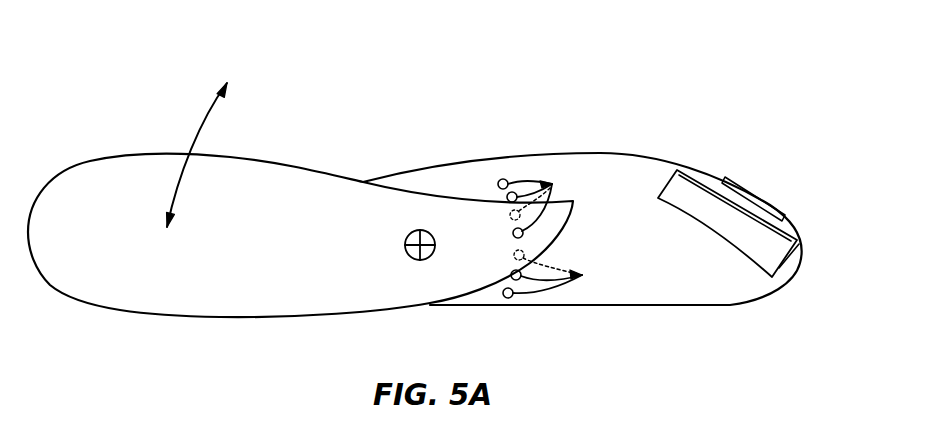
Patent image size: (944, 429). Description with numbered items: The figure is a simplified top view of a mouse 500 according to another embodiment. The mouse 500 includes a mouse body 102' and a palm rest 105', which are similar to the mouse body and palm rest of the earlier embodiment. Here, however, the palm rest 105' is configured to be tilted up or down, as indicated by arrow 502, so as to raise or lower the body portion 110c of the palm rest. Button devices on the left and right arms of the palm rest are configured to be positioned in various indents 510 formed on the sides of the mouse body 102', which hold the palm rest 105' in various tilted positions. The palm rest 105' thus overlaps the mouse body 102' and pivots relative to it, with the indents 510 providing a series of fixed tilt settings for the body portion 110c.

The mouse 500 is at (770, 73).
The mouse body 102' is at (582, 195).
The palm rest 105' is at (300, 263).
The body portion 110c is at (127, 242).
The arrow 502 is at (197, 130).
The indents 510 is at (565, 234).